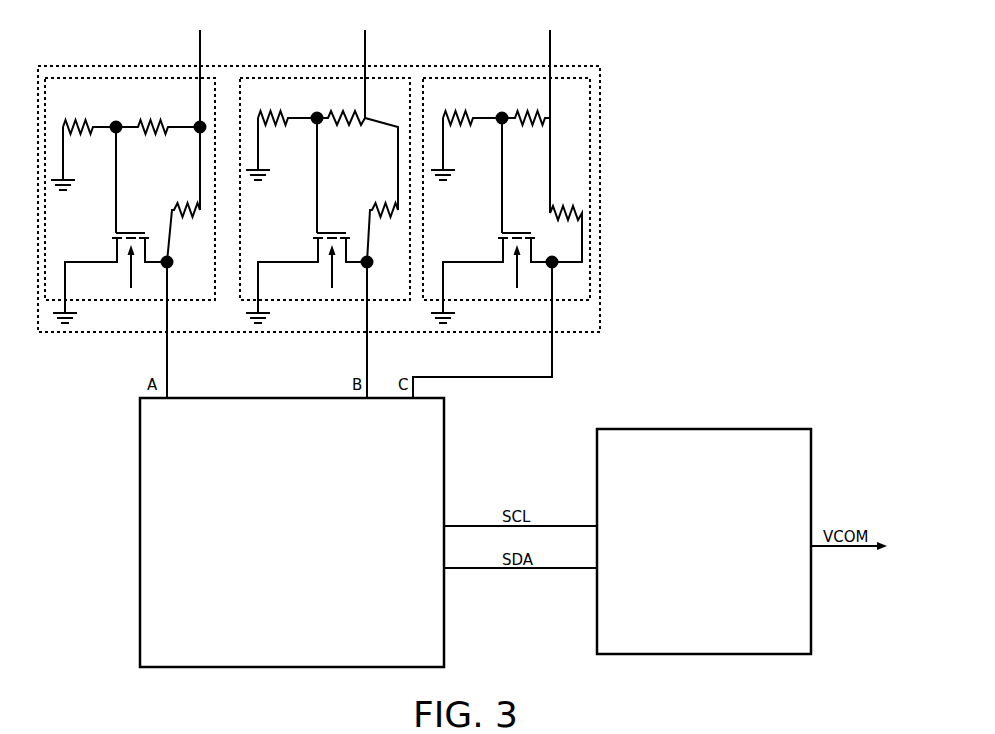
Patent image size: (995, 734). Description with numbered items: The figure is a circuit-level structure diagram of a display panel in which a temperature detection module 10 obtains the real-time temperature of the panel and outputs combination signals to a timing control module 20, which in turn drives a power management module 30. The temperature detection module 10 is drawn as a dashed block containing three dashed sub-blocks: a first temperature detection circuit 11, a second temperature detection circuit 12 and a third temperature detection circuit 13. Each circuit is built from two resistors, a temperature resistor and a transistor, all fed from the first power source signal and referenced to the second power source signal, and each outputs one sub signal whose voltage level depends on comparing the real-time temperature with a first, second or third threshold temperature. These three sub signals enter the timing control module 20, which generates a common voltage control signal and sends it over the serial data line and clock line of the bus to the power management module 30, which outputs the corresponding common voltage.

The temperature detection module 10 is at (585, 65).
The first temperature detection circuit 11 is at (65, 77).
The second temperature detection circuit 12 is at (263, 78).
The third temperature detection circuit 13 is at (448, 78).
The timing control module 20 is at (140, 557).
The power management module 30 is at (690, 429).